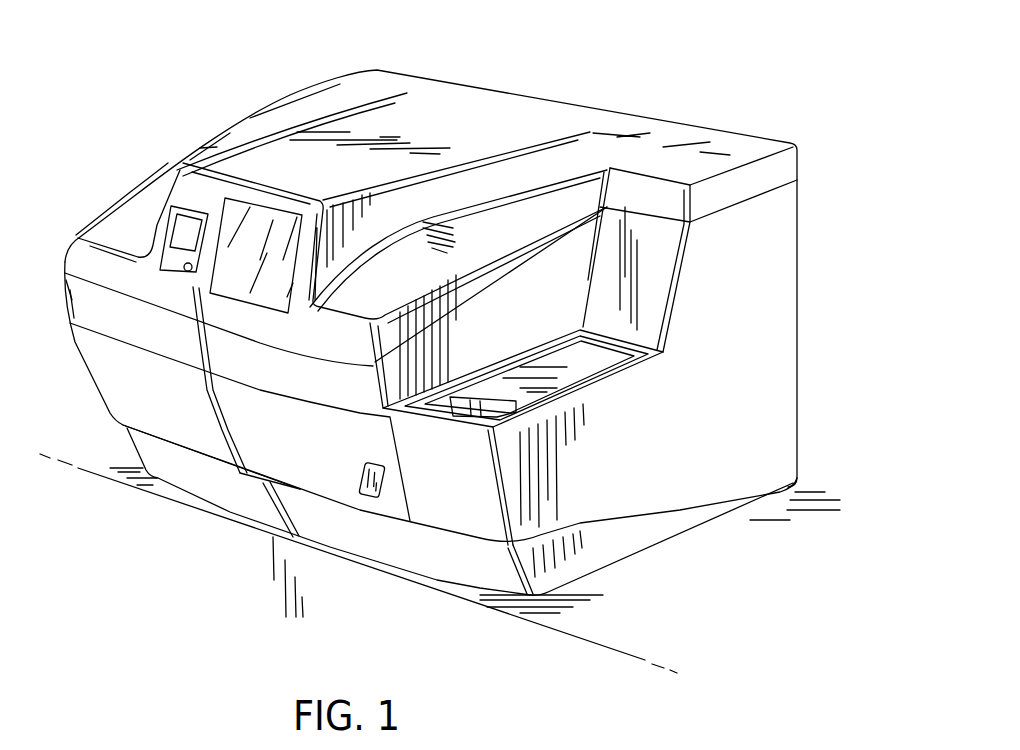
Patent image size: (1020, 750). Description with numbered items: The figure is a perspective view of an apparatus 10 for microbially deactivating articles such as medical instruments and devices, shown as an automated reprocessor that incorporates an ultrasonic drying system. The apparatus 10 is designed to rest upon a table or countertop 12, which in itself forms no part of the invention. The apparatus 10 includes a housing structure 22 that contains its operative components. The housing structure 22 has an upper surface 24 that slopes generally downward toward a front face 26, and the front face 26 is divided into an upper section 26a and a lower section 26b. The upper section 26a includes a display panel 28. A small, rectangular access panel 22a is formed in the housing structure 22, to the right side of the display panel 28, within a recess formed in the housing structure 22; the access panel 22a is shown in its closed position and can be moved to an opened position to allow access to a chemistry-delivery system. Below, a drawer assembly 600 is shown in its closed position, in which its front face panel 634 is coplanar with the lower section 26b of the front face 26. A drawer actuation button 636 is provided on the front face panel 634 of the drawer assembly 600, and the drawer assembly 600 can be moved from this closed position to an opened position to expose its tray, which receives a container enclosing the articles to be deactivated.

The apparatus 10 is at (618, 58).
The countertop 12 is at (563, 623).
The housing structure 22 is at (782, 282).
The access panel 22a is at (580, 363).
The upper surface 24 is at (443, 118).
The front face 26 is at (65, 323).
The upper section 26a is at (88, 266).
The lower section 26b is at (452, 508).
The display panel 28 is at (185, 195).
The drawer assembly 600 is at (200, 452).
The front face panel 634 is at (268, 463).
The drawer actuation button 636 is at (368, 497).